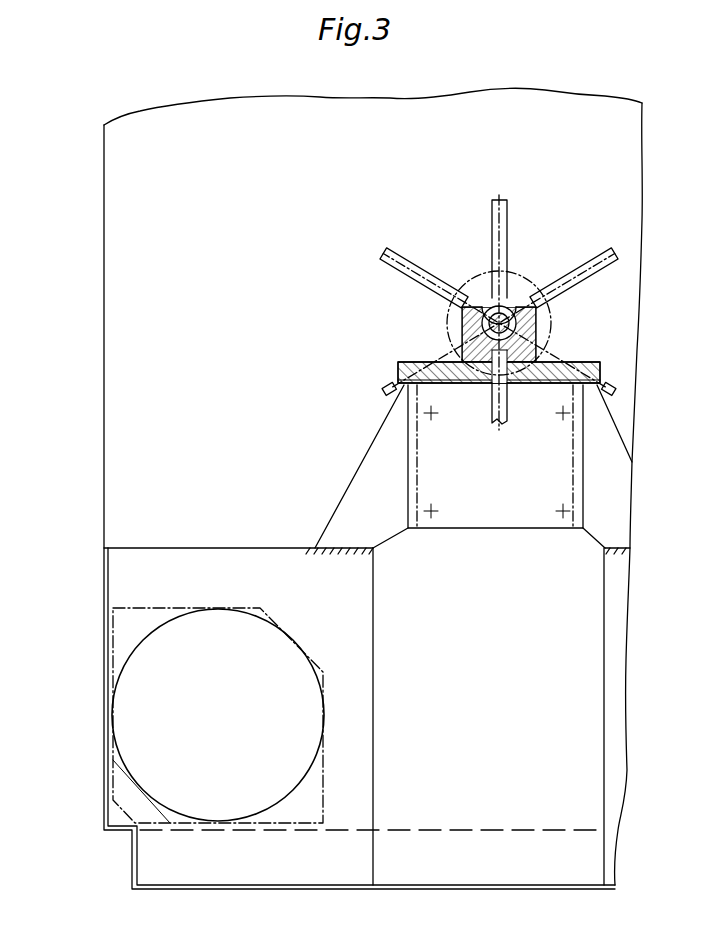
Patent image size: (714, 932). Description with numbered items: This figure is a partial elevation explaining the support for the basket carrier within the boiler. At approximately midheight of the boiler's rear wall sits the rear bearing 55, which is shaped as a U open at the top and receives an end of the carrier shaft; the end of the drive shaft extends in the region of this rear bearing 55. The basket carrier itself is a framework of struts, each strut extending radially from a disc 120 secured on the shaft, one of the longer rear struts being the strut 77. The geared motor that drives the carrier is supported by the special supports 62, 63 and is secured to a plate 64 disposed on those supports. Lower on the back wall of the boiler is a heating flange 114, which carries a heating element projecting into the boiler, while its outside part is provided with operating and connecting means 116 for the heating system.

The strut 77 is at (493, 211).
The disc 120 is at (522, 274).
The rear bearing 55 is at (468, 322).
The plate 64 is at (370, 465).
The special support 62 is at (176, 556).
The special support 63 is at (618, 587).
The operating and connecting means 116 is at (112, 617).
The heating flange 114 is at (128, 660).